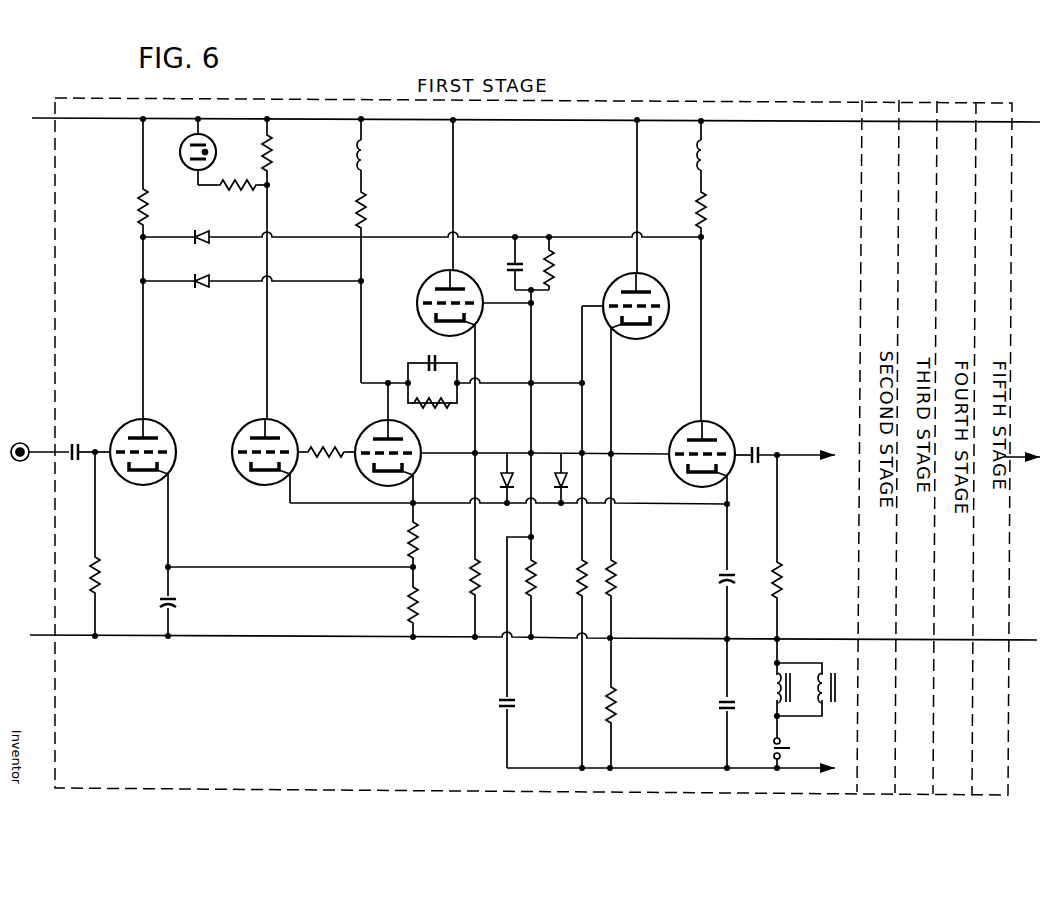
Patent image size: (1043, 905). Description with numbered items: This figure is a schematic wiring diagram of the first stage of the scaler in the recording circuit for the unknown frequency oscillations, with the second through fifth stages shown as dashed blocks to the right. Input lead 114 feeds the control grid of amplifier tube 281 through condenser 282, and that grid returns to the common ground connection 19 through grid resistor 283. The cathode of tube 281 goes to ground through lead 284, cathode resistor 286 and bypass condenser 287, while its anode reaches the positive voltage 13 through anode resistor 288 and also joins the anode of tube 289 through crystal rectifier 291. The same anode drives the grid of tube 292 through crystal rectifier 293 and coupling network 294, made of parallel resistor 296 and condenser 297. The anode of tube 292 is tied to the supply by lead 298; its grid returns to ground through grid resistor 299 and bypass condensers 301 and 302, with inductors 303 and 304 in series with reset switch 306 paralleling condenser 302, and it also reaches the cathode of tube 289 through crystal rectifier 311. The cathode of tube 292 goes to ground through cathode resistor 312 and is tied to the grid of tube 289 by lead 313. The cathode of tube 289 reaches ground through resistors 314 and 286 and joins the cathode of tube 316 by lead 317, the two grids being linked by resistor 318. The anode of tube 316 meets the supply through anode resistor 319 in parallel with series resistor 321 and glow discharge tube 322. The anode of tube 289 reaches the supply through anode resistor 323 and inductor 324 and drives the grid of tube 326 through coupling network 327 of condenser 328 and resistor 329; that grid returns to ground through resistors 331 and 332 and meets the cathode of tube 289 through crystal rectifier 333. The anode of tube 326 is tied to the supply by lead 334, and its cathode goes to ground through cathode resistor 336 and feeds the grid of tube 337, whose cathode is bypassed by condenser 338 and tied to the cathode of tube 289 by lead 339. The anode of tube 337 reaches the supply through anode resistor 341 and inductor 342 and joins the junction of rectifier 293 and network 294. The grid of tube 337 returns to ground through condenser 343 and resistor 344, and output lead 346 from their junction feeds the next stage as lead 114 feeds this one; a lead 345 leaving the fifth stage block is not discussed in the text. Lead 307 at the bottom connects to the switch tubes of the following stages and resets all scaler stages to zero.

The positive voltage 13 is at (44, 118).
The common ground connection 19 is at (44, 635).
The input lead 114 is at (48, 451).
The amplifier tube 281 is at (168, 448).
The condenser 282 is at (73, 450).
The grid resistor 283 is at (100, 574).
The lead 284 is at (268, 569).
The cathode resistor 286 is at (408, 606).
The bypass condenser 287 is at (176, 602).
The anode resistor 288 is at (139, 210).
The tube 289 is at (380, 423).
The crystal rectifier 291 is at (202, 287).
The tube 292 is at (436, 283).
The crystal rectifier 293 is at (203, 231).
The coupling network 294 is at (524, 256).
The resistor 296 is at (554, 270).
The condenser 297 is at (507, 268).
The lead 298 is at (452, 204).
The grid resistor 299 is at (537, 572).
The bypass condenser 301 is at (497, 706).
The bypass condenser 302 is at (718, 706).
The inductor 303 is at (772, 691).
The inductor 304 is at (822, 674).
The reset switch 306 is at (772, 748).
The lead 307 is at (813, 767).
The crystal rectifier 311 is at (502, 464).
The cathode resistor 312 is at (470, 572).
The lead 313 is at (434, 452).
The resistor 314 is at (408, 536).
The tube 316 is at (289, 434).
The lead 317 is at (292, 504).
The resistor 318 is at (314, 460).
The anode resistor 319 is at (273, 153).
The resistor 321 is at (226, 190).
The glow discharge tube 322 is at (214, 153).
The anode resistor 323 is at (367, 210).
The inductor 324 is at (366, 154).
The tube 326 is at (650, 286).
The coupling network 327 is at (421, 377).
The condenser 328 is at (432, 360).
The resistor 329 is at (428, 404).
The resistor 331 is at (577, 586).
The resistor 332 is at (615, 697).
The crystal rectifier 333 is at (556, 464).
The lead 334 is at (635, 186).
The cathode resistor 336 is at (615, 580).
The tube 337 is at (721, 436).
The bypass condenser 338 is at (718, 581).
The lead 339 is at (648, 508).
The anode resistor 341 is at (707, 210).
The inductor 342 is at (706, 154).
The condenser 343 is at (759, 453).
The resistor 344 is at (784, 578).
The output lead 345 is at (1019, 456).
The output lead 346 is at (816, 454).